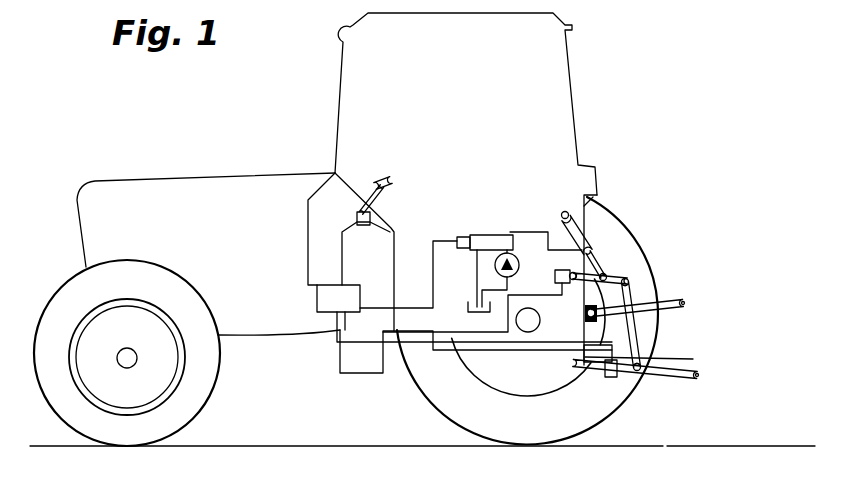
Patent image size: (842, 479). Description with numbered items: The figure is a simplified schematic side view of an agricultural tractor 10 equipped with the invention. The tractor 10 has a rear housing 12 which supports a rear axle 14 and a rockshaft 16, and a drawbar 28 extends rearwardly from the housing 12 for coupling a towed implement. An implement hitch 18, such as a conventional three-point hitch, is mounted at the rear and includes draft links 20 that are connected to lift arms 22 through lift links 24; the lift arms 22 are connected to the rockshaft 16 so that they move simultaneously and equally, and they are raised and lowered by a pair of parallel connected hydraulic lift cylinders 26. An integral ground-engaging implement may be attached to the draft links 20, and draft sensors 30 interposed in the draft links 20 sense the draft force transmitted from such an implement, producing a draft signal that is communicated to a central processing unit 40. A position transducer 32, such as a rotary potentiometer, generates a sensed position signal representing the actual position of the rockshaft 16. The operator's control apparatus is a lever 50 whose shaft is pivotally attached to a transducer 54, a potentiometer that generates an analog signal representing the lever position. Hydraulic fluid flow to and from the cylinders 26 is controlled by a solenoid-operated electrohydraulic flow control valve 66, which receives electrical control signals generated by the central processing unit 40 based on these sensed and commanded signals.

The tractor 10 is at (246, 146).
The rear housing 12 is at (573, 205).
The rear axle 14 is at (534, 332).
The rockshaft 16 is at (576, 286).
The implement hitch 18 is at (673, 269).
The draft links 20 is at (690, 379).
The lift arms 22 is at (606, 280).
The lift links 24 is at (645, 323).
The hydraulic lift cylinders 26 is at (583, 237).
The drawbar 28 is at (693, 360).
The draft sensors 30 is at (610, 378).
The position transducer 32 is at (562, 270).
The central processing unit 40 is at (313, 307).
The lever 50 is at (403, 178).
The transducer 54 is at (368, 227).
The electrohydraulic flow control valve 66 is at (482, 235).